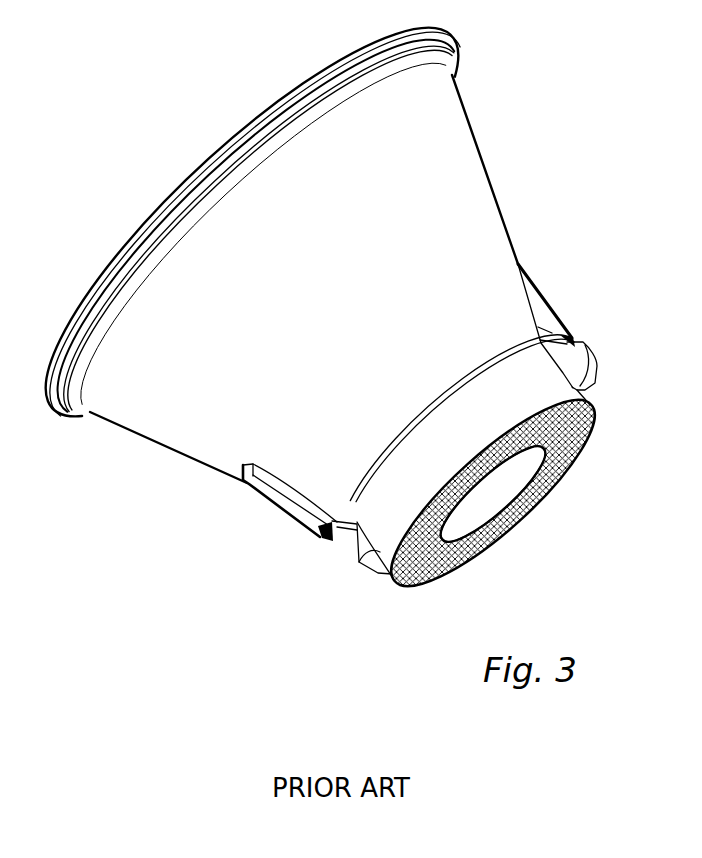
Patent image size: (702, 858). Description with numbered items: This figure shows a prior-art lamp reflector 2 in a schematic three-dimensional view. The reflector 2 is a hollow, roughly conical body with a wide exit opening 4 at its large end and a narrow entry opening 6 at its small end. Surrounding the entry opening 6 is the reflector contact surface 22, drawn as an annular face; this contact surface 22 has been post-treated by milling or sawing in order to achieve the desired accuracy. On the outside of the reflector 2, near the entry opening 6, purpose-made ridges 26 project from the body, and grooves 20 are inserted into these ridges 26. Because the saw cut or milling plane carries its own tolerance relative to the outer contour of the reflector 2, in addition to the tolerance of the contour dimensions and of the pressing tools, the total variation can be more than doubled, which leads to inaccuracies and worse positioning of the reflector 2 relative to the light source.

The reflector 2 is at (447, 160).
The exit opening 4 is at (195, 160).
The entry opening 6 is at (493, 492).
The grooves 20 is at (573, 340).
The reflector contact surface 22 is at (586, 437).
The ridges 26 is at (556, 309).